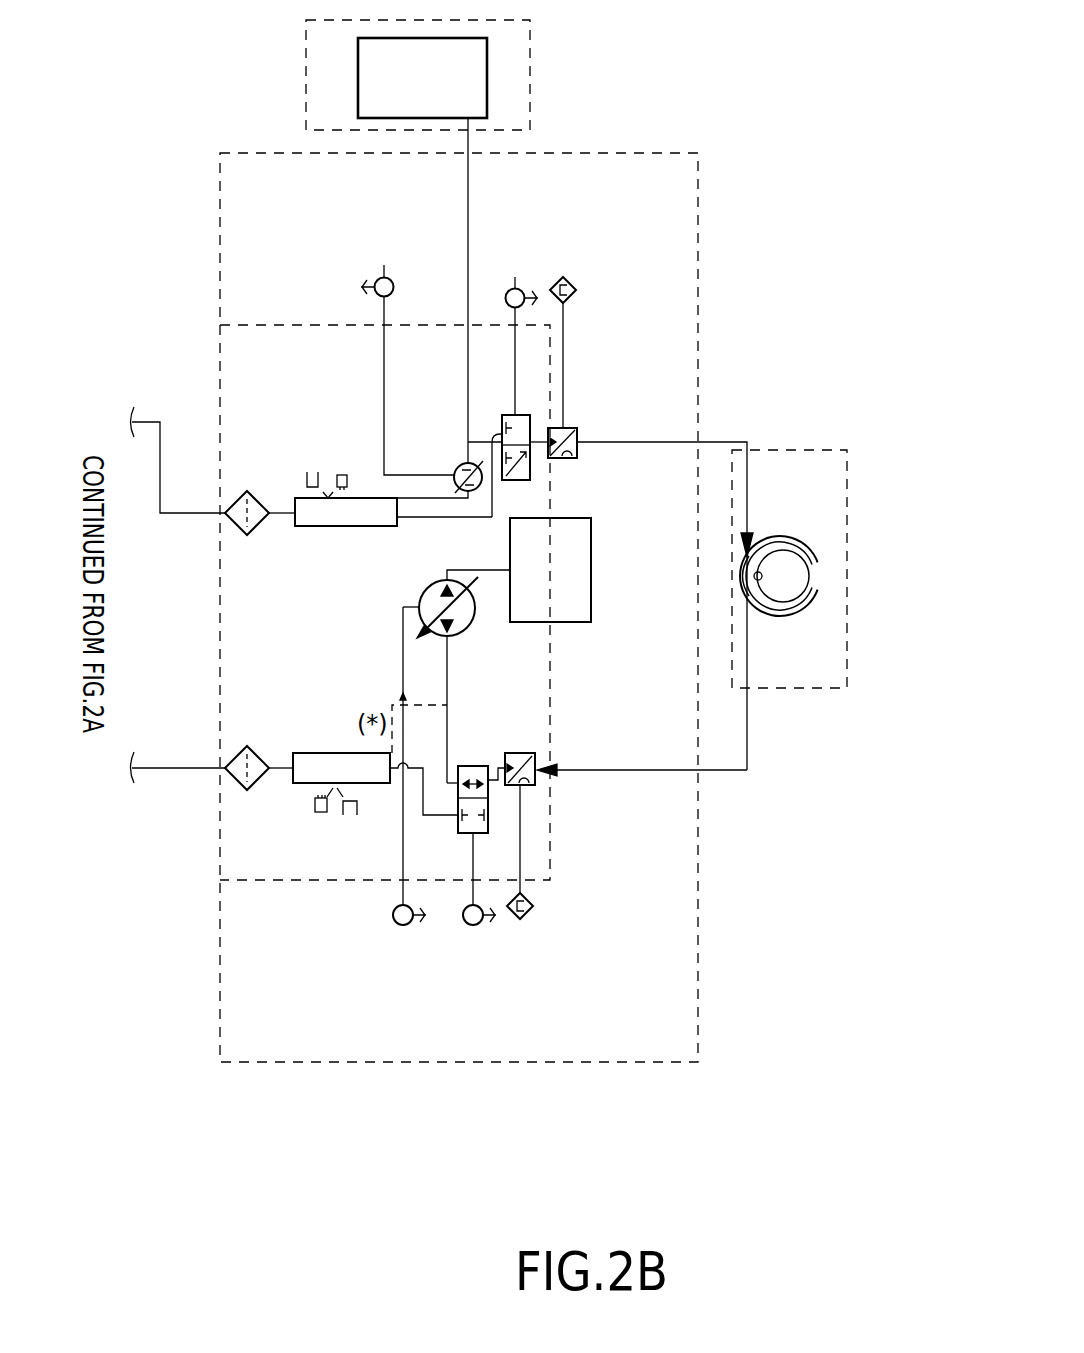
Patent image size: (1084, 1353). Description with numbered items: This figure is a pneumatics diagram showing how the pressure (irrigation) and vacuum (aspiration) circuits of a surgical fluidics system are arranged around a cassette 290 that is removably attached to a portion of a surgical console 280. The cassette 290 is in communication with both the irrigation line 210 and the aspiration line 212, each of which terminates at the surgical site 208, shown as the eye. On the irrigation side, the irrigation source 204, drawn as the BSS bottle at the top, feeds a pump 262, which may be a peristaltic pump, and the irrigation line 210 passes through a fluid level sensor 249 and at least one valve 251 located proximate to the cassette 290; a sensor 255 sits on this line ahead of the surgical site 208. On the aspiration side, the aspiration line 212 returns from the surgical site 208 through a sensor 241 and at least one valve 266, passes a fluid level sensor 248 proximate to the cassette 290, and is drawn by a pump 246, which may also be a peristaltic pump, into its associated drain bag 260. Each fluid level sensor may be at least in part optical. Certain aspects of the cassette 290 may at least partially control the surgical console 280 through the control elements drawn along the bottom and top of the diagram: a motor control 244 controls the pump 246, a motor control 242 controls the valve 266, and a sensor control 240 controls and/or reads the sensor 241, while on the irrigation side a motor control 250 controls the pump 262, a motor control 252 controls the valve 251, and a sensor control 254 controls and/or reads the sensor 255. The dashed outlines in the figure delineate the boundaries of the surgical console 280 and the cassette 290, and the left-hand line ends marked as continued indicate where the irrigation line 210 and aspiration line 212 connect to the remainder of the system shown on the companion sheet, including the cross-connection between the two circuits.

The irrigation source 204 is at (530, 47).
The surgical site 208 is at (847, 528).
The irrigation line 210 is at (727, 442).
The aspiration line 212 is at (747, 743).
The sensor control 240 is at (532, 910).
The sensor 241 is at (523, 753).
The motor control 242 is at (477, 927).
The motor control 244 is at (398, 927).
The pump 246 is at (428, 587).
The fluid level sensor 248 is at (320, 812).
The fluid level sensor 249 is at (310, 472).
The motor control 250 is at (382, 278).
The valve 251 is at (502, 415).
The motor control 252 is at (507, 290).
The sensor control 254 is at (567, 277).
The sensor 255 is at (577, 430).
The drain bag 260 is at (591, 543).
The pump 262 is at (460, 463).
The valve 266 is at (478, 766).
The surgical console 280 is at (220, 678).
The cassette 290 is at (698, 965).